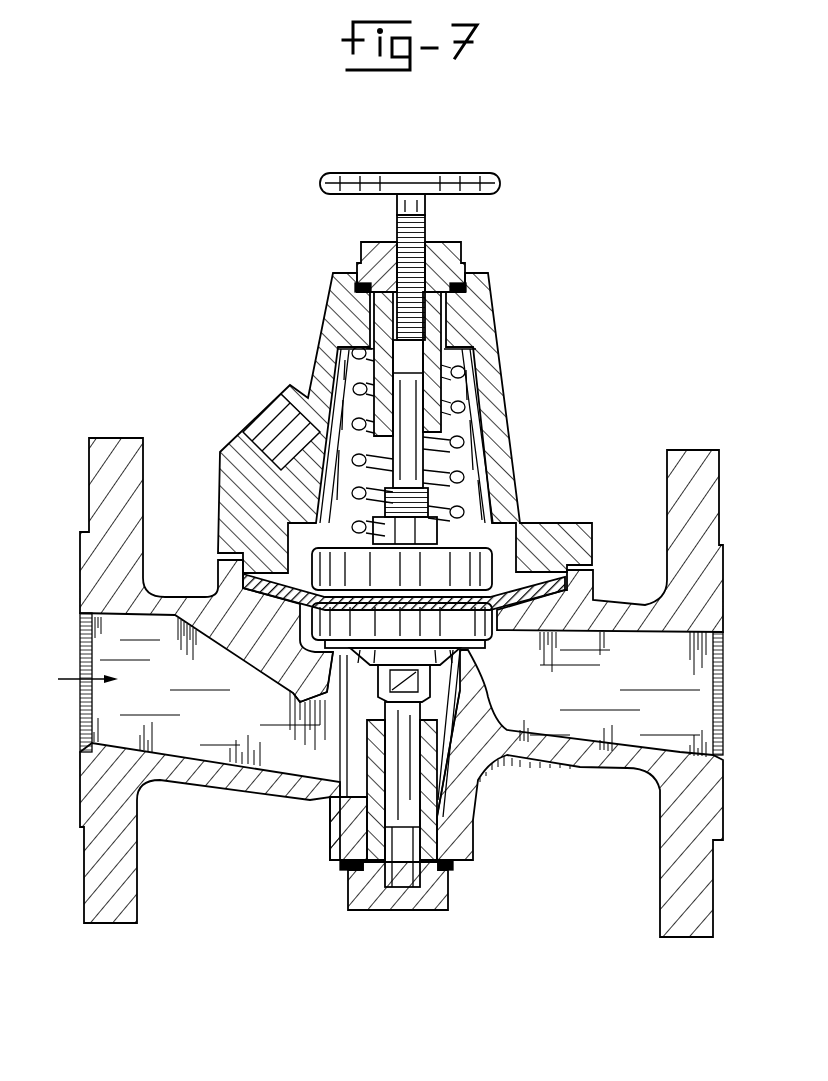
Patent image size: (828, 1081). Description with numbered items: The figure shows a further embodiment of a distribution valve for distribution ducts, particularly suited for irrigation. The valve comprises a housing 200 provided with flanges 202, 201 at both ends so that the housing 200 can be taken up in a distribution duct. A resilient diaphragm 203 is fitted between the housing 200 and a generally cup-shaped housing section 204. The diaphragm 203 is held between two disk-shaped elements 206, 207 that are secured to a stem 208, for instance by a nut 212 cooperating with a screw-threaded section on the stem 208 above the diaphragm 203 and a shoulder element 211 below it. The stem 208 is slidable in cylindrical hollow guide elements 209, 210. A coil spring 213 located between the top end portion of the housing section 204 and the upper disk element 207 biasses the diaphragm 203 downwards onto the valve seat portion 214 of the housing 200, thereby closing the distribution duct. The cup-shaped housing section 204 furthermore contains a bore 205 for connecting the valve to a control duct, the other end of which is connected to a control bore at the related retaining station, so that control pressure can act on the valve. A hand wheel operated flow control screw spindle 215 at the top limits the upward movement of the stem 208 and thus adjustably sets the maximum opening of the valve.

The housing 200 is at (282, 782).
The flange 201 is at (680, 455).
The flange 202 is at (112, 447).
The resilient diaphragm 203 is at (505, 548).
The cup-shaped housing section 204 is at (488, 362).
The bore 205 is at (255, 415).
The disk-shaped element 206 is at (505, 633).
The upper disk element 207 is at (482, 537).
The stem 208 is at (415, 428).
The cylindrical hollow guide element 209 is at (450, 322).
The cylindrical hollow guide element 210 is at (430, 837).
The shoulder element 211 is at (505, 672).
The nut 212 is at (478, 487).
The coil spring 213 is at (480, 440).
The valve seat portion 214 is at (312, 690).
The hand wheel operated flow control screw spindle 215 is at (460, 183).